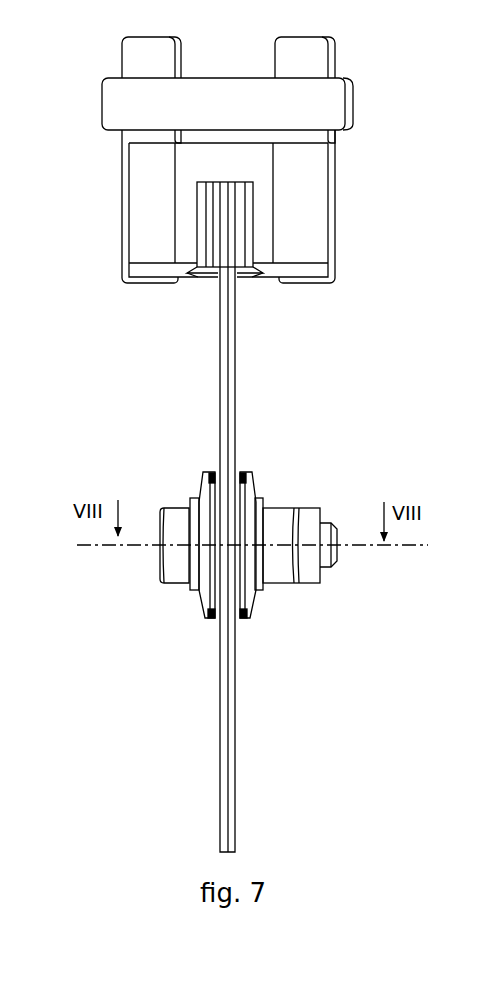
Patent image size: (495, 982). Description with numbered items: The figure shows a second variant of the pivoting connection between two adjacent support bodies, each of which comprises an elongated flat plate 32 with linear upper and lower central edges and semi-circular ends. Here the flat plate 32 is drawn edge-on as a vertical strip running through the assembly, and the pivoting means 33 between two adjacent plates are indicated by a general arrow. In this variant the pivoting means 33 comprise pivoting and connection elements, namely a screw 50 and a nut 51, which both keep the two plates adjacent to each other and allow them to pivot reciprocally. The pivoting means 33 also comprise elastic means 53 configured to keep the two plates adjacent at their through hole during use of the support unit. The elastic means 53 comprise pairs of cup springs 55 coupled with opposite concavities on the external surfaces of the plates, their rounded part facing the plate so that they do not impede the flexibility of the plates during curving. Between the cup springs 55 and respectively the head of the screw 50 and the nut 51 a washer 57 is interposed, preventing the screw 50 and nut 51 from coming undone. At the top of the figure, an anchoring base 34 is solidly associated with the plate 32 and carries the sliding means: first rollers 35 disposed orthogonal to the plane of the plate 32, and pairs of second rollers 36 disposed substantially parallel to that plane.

The flat plate 32 is at (231, 330).
The pivoting means 33 is at (317, 444).
The anchoring base 34 is at (303, 205).
The first rollers 35 is at (333, 115).
The second rollers 36 is at (162, 48).
The screw 50 is at (172, 520).
The nut 51 is at (303, 577).
The elastic means 53 is at (200, 619).
The cup springs 55 is at (206, 470).
The washer 57 is at (195, 503).